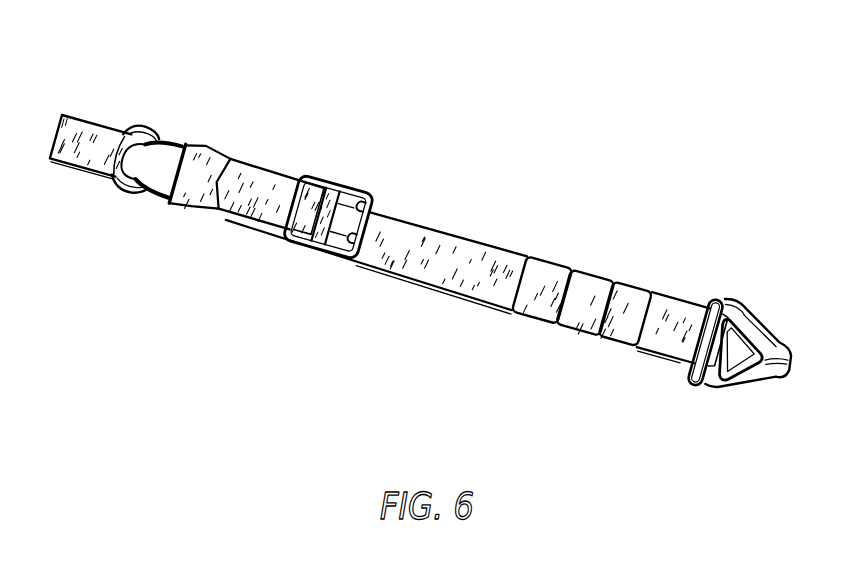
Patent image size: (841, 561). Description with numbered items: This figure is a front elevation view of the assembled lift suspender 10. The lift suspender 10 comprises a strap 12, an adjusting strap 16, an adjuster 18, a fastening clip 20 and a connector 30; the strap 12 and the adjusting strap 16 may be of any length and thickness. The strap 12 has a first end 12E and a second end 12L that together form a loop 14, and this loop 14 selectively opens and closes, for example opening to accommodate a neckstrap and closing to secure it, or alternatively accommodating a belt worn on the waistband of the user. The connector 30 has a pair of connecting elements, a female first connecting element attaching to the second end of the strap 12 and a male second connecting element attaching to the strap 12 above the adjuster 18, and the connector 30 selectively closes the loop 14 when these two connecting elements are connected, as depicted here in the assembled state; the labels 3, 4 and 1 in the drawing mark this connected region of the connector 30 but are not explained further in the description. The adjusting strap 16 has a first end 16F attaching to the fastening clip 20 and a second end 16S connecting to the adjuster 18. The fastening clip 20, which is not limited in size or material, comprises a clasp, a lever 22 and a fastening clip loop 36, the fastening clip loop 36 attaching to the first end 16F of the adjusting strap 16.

The lift suspender 10 is at (470, 74).
The connector 30 is at (173, 108).
The female buckle portion 3 is at (142, 130).
The male buckle portion 4 is at (192, 138).
The buckle cross bar 1 is at (170, 201).
The strap 12 is at (260, 227).
The first end 12E is at (332, 185).
The second end 12L is at (108, 188).
The loop 14 is at (70, 172).
The adjusting strap 16 is at (430, 222).
The second end 16S is at (323, 243).
The first end 16F is at (690, 370).
The adjuster 18 is at (355, 188).
The fastening clip 20 is at (752, 307).
The lever 22 is at (738, 367).
The fastening clip loop 36 is at (698, 393).